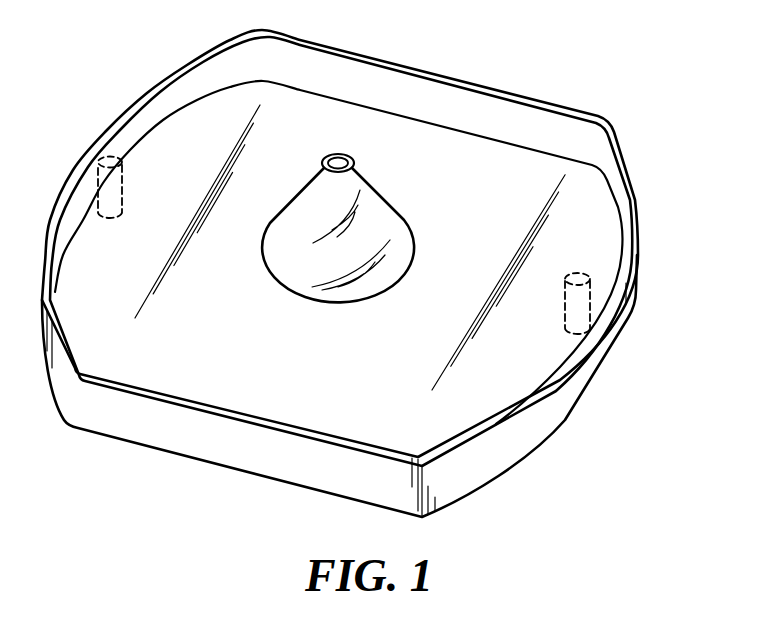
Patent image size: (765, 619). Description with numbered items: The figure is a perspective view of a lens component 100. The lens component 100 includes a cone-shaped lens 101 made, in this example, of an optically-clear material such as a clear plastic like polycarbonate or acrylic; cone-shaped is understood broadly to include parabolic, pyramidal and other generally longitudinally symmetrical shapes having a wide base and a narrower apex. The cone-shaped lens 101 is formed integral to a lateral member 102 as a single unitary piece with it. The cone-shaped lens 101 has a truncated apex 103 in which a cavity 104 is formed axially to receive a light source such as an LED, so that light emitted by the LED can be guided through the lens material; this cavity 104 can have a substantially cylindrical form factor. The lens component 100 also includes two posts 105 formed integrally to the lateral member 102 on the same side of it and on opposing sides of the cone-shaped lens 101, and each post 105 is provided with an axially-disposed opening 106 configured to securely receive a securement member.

The lens component 100 is at (230, 525).
The cone-shaped lens 101 is at (380, 213).
The lateral member 102 is at (305, 116).
The truncated apex 103 is at (347, 158).
The cavity 104 is at (338, 165).
The posts 105 is at (97, 179).
The axially-disposed opening 106 is at (112, 157).